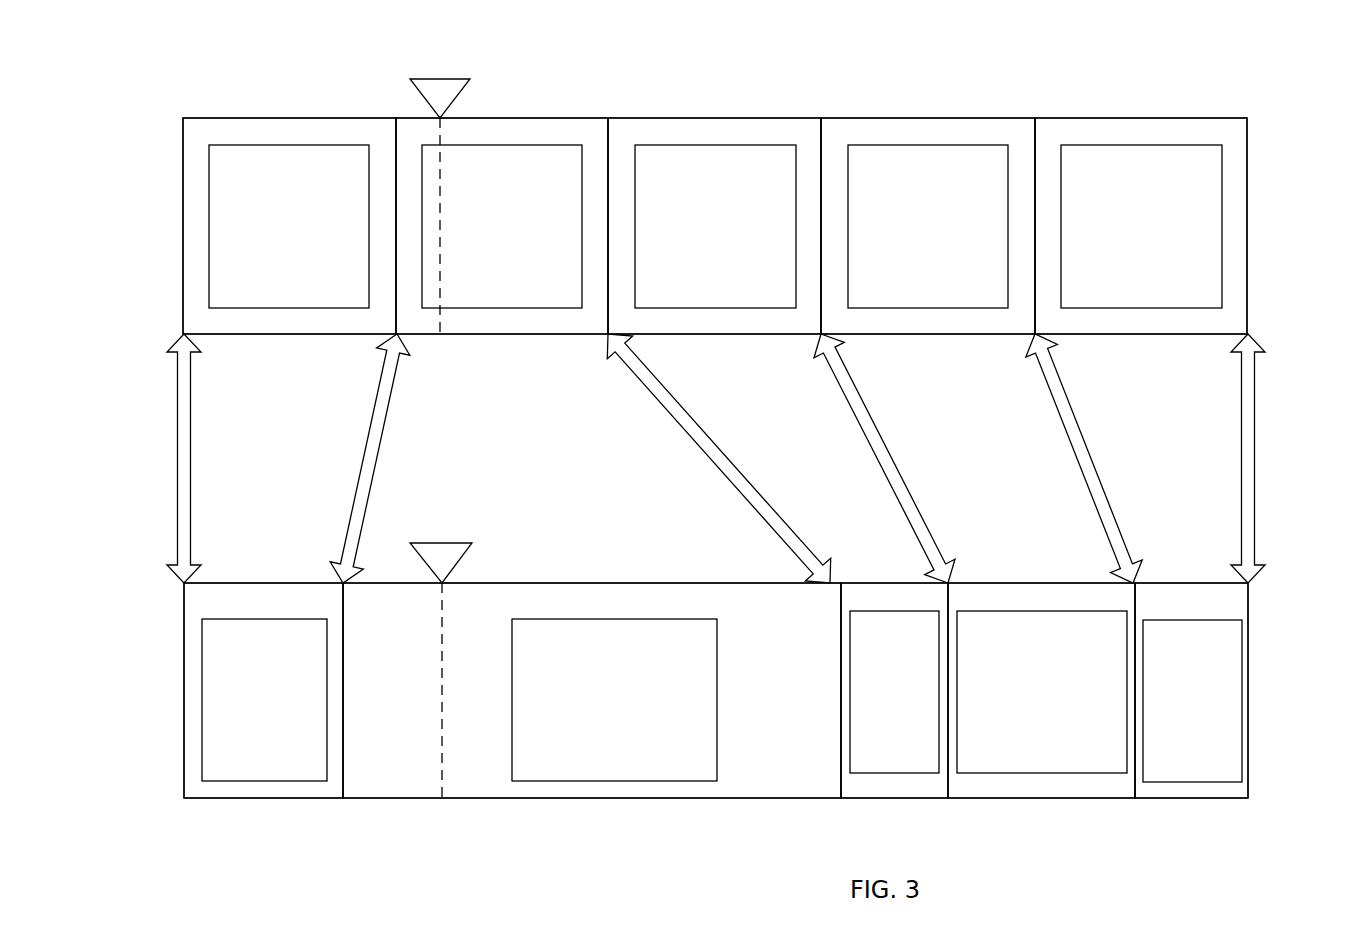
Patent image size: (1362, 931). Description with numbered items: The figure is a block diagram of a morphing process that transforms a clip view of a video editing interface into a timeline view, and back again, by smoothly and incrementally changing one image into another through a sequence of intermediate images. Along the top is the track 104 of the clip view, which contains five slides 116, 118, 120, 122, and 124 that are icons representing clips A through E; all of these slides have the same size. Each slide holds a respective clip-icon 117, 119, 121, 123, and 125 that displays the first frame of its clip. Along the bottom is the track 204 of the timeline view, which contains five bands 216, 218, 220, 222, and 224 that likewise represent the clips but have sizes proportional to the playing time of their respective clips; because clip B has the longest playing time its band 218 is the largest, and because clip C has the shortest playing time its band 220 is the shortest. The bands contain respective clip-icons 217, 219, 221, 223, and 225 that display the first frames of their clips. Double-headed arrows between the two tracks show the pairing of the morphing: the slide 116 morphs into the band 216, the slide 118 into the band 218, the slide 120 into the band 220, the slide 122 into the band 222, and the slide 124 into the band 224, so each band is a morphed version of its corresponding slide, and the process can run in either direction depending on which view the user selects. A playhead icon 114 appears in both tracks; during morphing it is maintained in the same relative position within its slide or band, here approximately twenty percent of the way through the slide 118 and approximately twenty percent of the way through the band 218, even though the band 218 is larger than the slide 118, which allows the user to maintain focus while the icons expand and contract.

The track 104 is at (1247, 227).
The track 204 is at (1248, 693).
The playhead icon 114 is at (430, 78).
The slide 116 is at (251, 118).
The clip-icon 117 is at (288, 145).
The slide 118 is at (482, 118).
The clip-icon 119 is at (528, 145).
The slide 120 is at (680, 145).
The clip-icon 121 is at (750, 118).
The slide 122 is at (893, 118).
The clip-icon 123 is at (928, 145).
The slide 124 is at (1088, 118).
The clip-icon 125 is at (1160, 145).
The band 216 is at (222, 798).
The clip-icon 217 is at (290, 781).
The band 218 is at (523, 798).
The clip-icon 219 is at (617, 781).
The band 220 is at (860, 798).
The clip-icon 221 is at (912, 773).
The band 222 is at (1018, 798).
The clip-icon 223 is at (1090, 773).
The band 224 is at (1172, 798).
The clip-icon 225 is at (1193, 782).